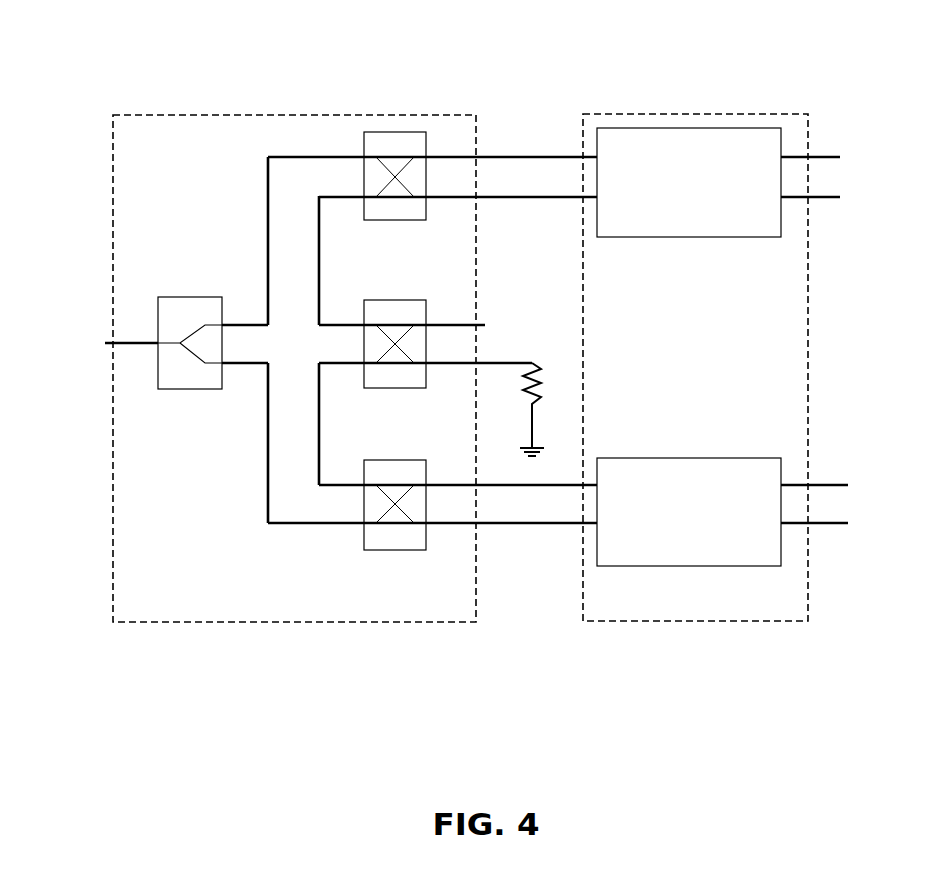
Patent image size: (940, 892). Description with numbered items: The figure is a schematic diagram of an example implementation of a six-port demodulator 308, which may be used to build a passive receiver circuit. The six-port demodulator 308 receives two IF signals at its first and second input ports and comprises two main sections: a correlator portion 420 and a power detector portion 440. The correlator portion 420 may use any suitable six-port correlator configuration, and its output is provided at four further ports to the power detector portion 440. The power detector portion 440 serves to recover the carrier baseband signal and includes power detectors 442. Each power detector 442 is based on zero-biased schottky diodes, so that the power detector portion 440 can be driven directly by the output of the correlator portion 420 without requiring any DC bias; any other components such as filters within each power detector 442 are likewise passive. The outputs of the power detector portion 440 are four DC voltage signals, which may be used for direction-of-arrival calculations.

The six-port demodulator 308 is at (190, 82).
The correlator portion 420 is at (115, 640).
The power detector portion 440 is at (583, 640).
The power detector 442 is at (689, 347).